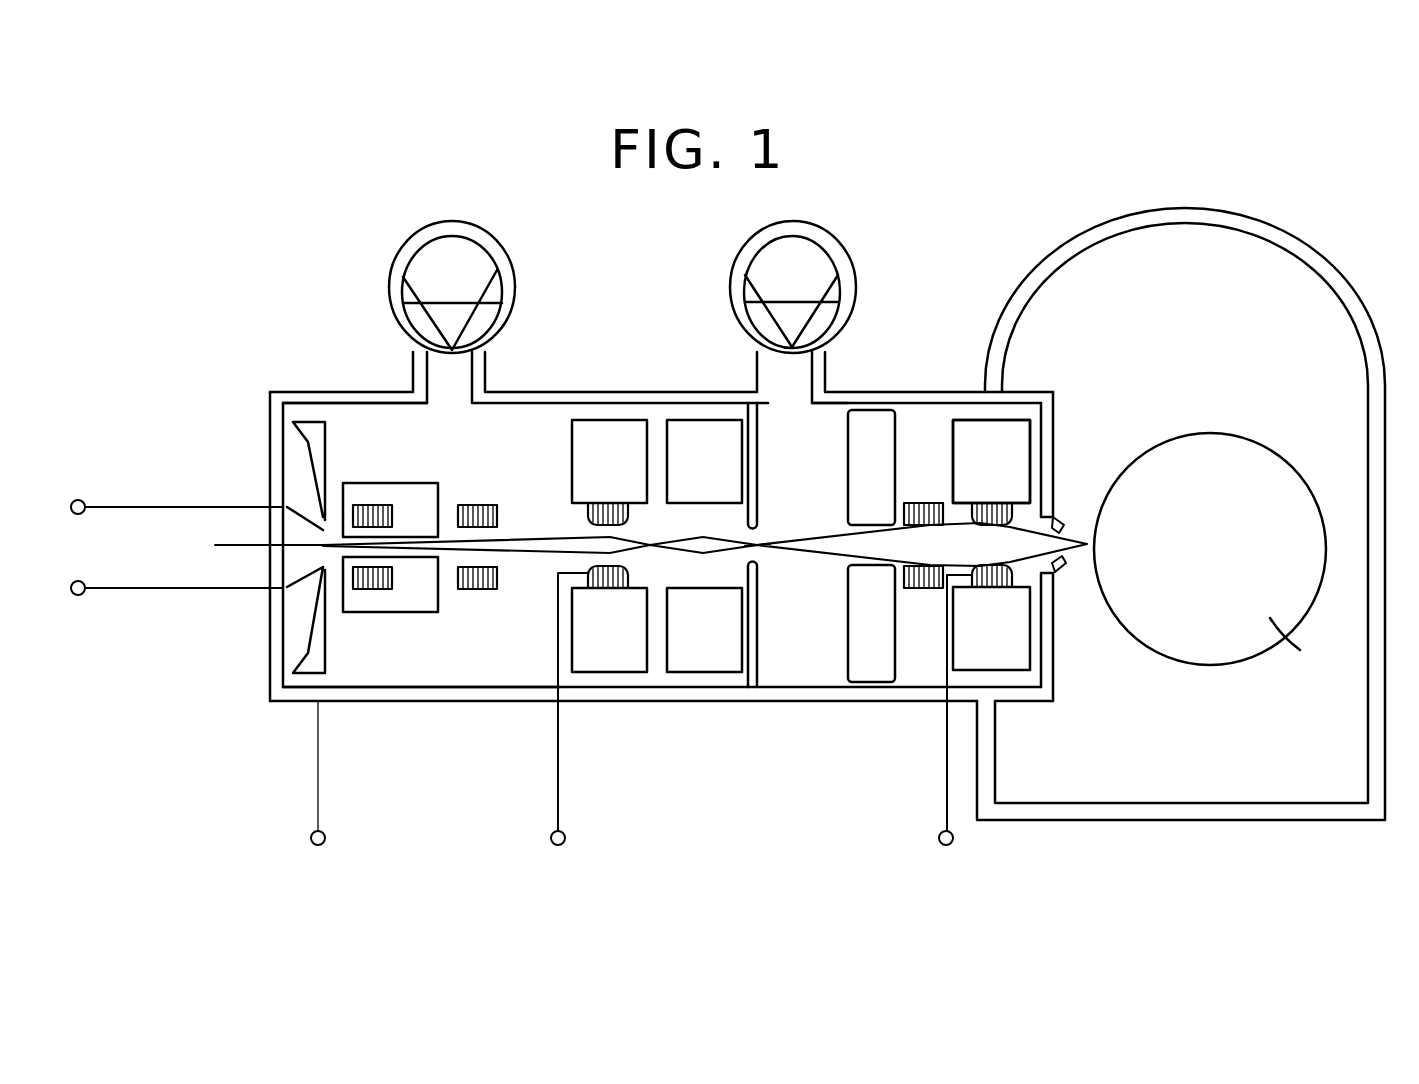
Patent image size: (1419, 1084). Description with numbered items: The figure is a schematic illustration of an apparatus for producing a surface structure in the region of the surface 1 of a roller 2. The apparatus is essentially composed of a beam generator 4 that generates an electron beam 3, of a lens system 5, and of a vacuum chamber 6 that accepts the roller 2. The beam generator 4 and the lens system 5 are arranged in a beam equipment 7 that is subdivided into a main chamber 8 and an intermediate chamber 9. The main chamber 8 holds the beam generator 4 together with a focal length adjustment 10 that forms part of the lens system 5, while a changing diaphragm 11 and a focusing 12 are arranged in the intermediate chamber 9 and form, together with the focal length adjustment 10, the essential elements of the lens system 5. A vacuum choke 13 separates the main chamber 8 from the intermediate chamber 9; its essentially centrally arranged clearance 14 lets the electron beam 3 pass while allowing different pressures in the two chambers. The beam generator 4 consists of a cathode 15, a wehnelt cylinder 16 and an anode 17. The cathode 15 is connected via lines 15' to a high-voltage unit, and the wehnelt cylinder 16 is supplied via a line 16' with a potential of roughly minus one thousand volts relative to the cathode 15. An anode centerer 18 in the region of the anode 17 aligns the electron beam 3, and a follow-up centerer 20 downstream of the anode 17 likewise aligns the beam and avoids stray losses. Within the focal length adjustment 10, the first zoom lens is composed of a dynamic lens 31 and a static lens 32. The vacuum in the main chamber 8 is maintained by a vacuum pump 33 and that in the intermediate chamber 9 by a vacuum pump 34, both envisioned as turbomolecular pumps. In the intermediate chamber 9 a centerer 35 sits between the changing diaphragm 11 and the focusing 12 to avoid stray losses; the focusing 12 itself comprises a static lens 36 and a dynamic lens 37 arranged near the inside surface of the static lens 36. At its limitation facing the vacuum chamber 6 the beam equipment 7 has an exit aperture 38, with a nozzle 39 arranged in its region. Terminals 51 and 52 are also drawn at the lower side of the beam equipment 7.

The surface 1 is at (1250, 435).
The roller 2 is at (1270, 618).
The electron beam 3 is at (530, 555).
The beam generator 4 is at (270, 467).
The lens system 5 is at (660, 701).
The vacuum chamber 6 is at (1185, 313).
The beam equipment 7 is at (692, 392).
The main chamber 8 is at (383, 433).
The intermediate chamber 9 is at (820, 440).
The focal length adjustment 10 is at (620, 701).
The changing diaphragm 11 is at (858, 672).
The focusing 12 is at (990, 430).
The vacuum choke 13 is at (758, 660).
The clearance 14 is at (762, 540).
The cathode 15 is at (255, 543).
The lines 15' is at (177, 549).
The wehnelt cylinder 16 is at (296, 596).
The line 16' is at (328, 797).
The anode 17 is at (425, 615).
The anode centerer 18 is at (370, 592).
The follow-up centerer 20 is at (487, 505).
The dynamic lens 31 is at (590, 510).
The static lens 32 is at (617, 440).
The vacuum pump 33 is at (497, 235).
The vacuum pump 34 is at (833, 240).
The centerer 35 is at (930, 503).
The static lens 36 is at (1035, 445).
The dynamic lens 37 is at (1012, 515).
The exit aperture 38 is at (1055, 577).
The nozzle 39 is at (1066, 563).
The lens terminal 51 is at (564, 731).
The final lens terminal 52 is at (950, 734).